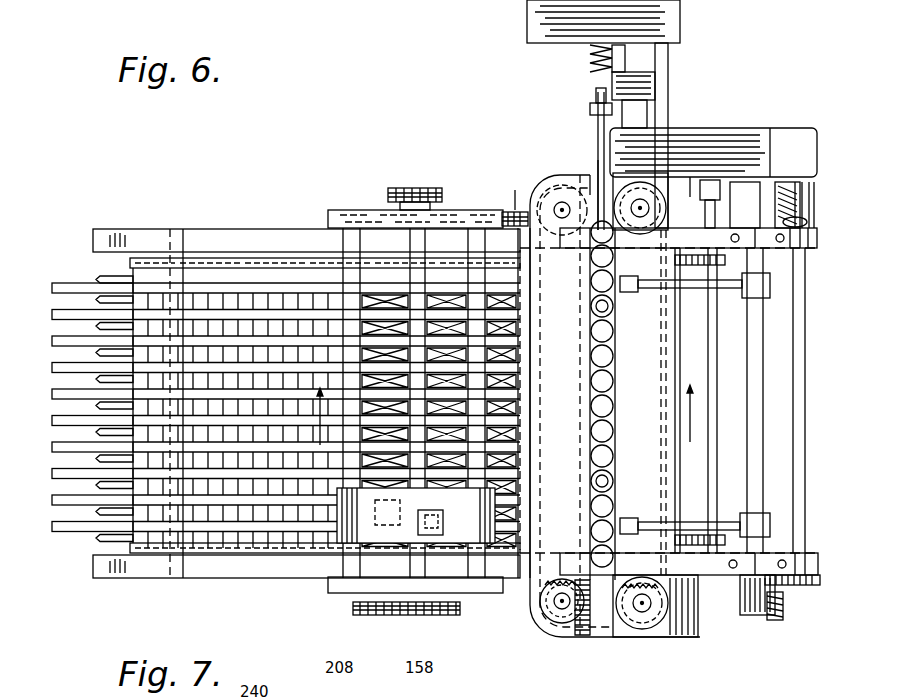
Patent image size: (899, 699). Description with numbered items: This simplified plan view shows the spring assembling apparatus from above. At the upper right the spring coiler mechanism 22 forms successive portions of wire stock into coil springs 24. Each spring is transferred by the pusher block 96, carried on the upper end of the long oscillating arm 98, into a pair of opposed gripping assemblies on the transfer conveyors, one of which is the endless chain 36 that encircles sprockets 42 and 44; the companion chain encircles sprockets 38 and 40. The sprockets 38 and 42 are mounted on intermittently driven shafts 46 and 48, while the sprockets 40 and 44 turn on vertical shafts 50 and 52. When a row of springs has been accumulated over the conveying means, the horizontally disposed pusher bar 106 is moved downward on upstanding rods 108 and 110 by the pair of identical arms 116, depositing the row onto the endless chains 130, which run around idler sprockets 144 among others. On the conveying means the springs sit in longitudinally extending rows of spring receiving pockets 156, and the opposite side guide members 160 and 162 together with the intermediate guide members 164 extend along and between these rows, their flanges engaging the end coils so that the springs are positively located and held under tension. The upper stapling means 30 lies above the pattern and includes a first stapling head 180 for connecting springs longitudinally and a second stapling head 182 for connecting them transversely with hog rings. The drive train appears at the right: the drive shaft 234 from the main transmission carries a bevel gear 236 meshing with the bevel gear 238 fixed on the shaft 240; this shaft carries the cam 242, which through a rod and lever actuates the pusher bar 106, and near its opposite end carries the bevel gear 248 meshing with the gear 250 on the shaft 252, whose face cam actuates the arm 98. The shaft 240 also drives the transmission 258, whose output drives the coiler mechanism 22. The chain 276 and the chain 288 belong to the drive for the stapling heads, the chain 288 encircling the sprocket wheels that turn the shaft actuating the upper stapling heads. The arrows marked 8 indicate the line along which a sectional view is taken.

The direction of movement arrow 8 is at (507, 415).
The spring coiler mechanism 22 is at (690, 23).
The coil springs 24 is at (600, 55).
The upper stapling means 30 is at (337, 556).
The endless chain 36 is at (520, 270).
The sprocket 38 is at (660, 610).
The sprocket 40 is at (713, 134).
The sprocket 42 is at (535, 625).
The sprocket 44 is at (549, 105).
The shaft 46 is at (645, 612).
The shaft 48 is at (560, 610).
The vertical shaft 50 is at (645, 200).
The vertical shaft 52 is at (560, 205).
The pusher block 96 is at (590, 159).
The oscillating arm 98 is at (598, 160).
The pusher bar 106 is at (605, 385).
The upstanding rod 108 is at (612, 330).
The upstanding rod 110 is at (612, 470).
The arms 116 is at (642, 292).
The endless chains 130 is at (238, 260).
The idler sprockets 144 is at (410, 240).
The spring receiving pockets 156 is at (760, 698).
The side guide member 160 is at (515, 215).
The side guide member 162 is at (535, 580).
The intermediate guide members 164 is at (522, 395).
The first stapling head 180 is at (416, 531).
The second stapling head 182 is at (385, 537).
The drive shaft 234 is at (742, 615).
The bevel gear 236 is at (795, 640).
The bevel gear 238 is at (805, 622).
The shaft 240 is at (688, 228).
The cam 242 is at (689, 564).
The bevel gear 248 is at (789, 152).
The gear 250 is at (762, 180).
The shaft 252 is at (725, 195).
The transmission 258 is at (700, 175).
The chain 276 is at (408, 615).
The chain 288 is at (410, 187).